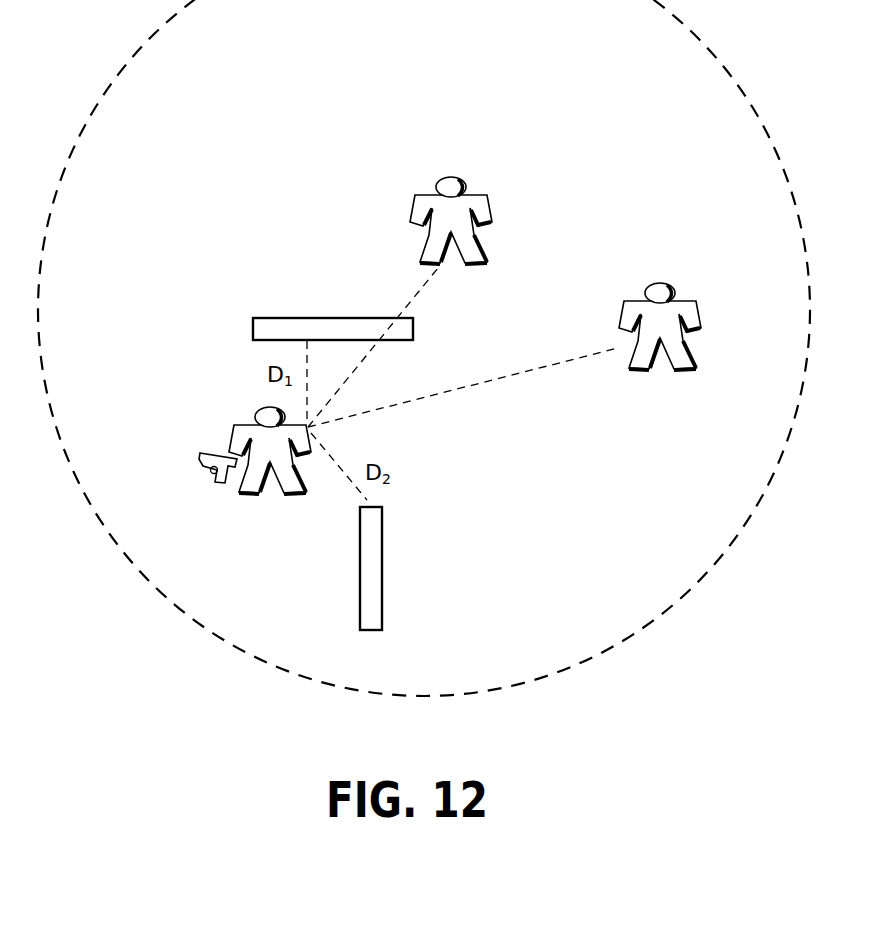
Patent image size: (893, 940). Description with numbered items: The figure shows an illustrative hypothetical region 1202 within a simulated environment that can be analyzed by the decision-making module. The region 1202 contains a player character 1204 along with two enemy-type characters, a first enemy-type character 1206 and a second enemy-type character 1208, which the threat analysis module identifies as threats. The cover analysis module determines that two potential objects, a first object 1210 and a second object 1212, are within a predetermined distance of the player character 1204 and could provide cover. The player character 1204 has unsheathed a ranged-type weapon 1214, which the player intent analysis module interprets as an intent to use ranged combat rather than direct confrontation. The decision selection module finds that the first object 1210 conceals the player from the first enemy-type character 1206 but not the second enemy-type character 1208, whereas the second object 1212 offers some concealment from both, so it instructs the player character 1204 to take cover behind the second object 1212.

The region 1202 is at (453, 96).
The player character 1204 is at (243, 413).
The first enemy-type character 1206 is at (413, 197).
The second enemy-type character 1208 is at (612, 306).
The first object 1210 is at (238, 332).
The second object 1212 is at (358, 588).
The ranged-type weapon 1214 is at (202, 469).